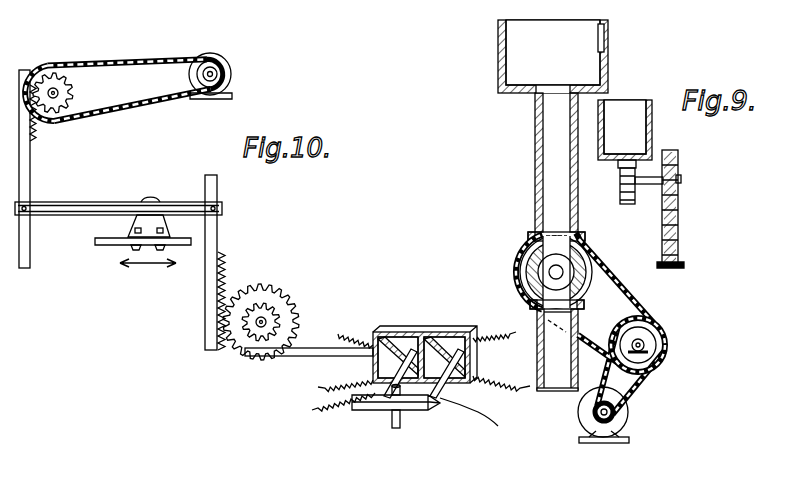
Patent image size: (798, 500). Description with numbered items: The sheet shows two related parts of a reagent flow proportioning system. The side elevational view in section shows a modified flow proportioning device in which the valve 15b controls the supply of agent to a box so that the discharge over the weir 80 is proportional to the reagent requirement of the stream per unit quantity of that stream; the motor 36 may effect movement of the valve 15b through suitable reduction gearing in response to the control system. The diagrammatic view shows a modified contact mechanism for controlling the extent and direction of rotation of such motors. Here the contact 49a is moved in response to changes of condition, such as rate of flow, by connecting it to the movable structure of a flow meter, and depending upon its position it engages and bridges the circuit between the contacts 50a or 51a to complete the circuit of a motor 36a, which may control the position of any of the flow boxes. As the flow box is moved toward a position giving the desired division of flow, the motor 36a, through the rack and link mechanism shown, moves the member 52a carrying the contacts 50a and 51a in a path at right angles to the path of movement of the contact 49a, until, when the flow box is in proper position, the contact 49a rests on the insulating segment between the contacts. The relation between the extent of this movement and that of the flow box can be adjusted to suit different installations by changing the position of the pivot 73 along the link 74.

In FIG. 10, the motor 36a is at (227, 56).
In FIG. 10, the link 74 is at (90, 202).
In FIG. 10, the pivot 73 is at (150, 202).
In FIG. 10, the contact 50a is at (403, 337).
In FIG. 10, the member 52a is at (458, 332).
In FIG. 10, the contact 51a is at (430, 395).
In FIG. 10, the contact 49a is at (425, 410).
In FIG. 9, the weir 80 is at (610, 62).
In FIG. 9, the valve 15b is at (543, 257).
In FIG. 9, the motor 36 is at (629, 420).